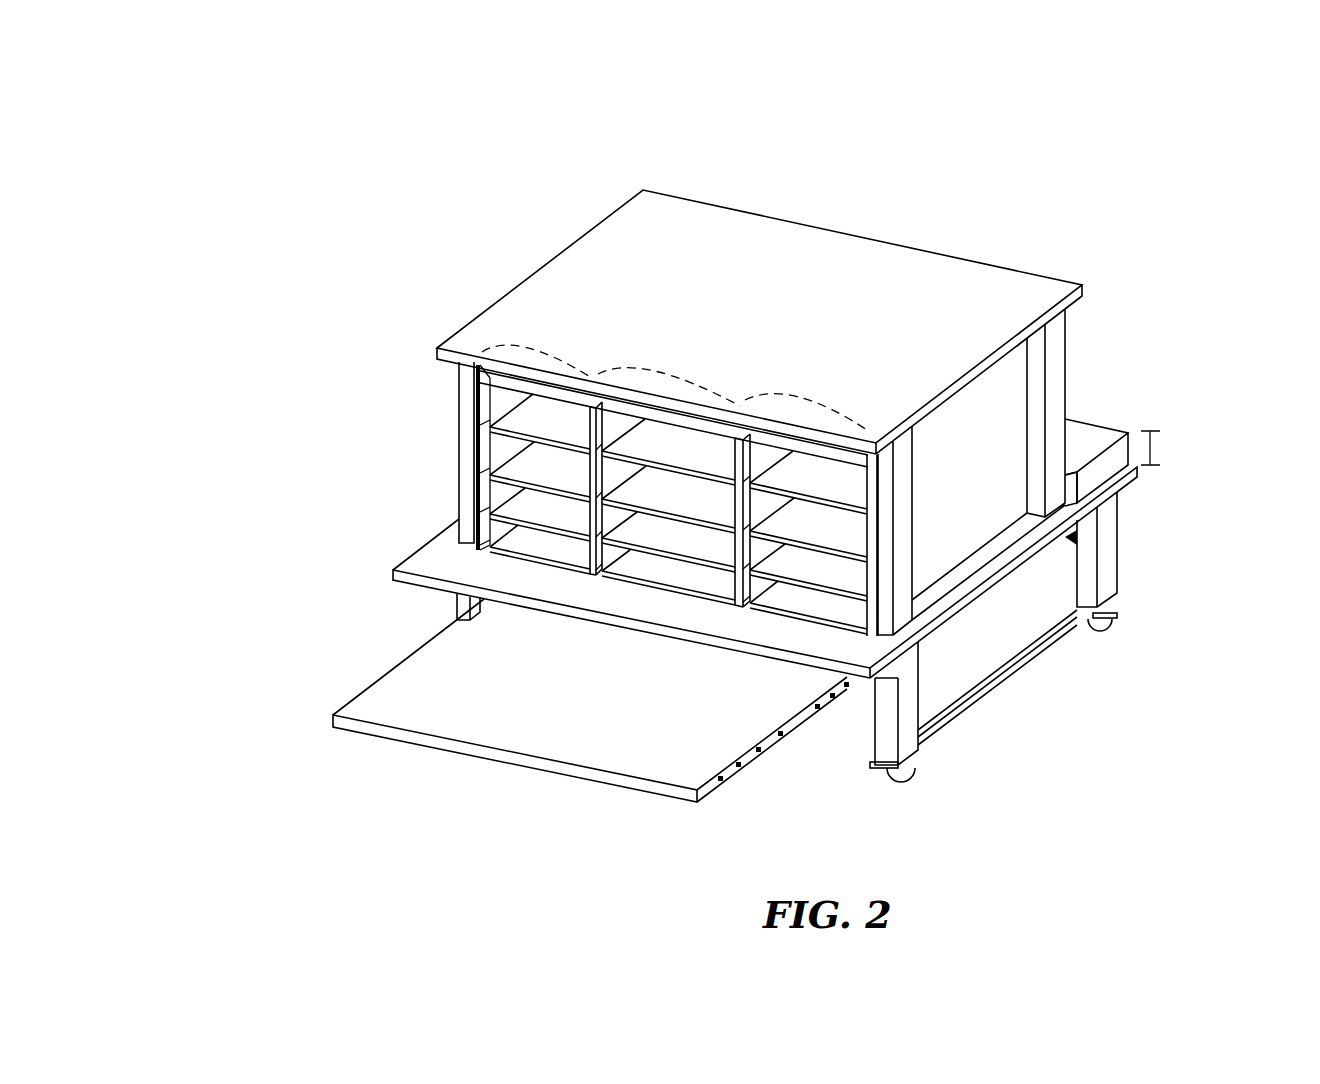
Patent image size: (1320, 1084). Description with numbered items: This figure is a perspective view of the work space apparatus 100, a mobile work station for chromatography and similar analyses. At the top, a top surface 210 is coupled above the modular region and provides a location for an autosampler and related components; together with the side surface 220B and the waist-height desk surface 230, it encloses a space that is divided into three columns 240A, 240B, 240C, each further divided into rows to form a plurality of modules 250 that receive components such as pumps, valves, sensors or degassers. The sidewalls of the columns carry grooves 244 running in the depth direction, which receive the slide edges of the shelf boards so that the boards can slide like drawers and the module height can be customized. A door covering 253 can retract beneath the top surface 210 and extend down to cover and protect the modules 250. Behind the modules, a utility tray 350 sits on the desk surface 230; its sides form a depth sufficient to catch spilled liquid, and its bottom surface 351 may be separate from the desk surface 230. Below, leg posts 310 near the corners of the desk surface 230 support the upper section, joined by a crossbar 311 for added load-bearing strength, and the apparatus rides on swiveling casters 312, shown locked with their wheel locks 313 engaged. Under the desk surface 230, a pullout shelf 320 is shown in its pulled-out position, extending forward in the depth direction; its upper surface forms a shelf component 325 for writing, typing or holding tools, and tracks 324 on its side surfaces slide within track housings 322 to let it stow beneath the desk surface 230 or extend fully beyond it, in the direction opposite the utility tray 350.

The work space apparatus 100 is at (222, 104).
The top surface 210 is at (652, 246).
The side surface 220B is at (955, 476).
The desk surface 230 is at (1143, 470).
The column 240A is at (472, 456).
The column 240B is at (669, 481).
The column 240C is at (807, 508).
The groove 244 is at (480, 447).
The module 250 is at (527, 421).
The door covering 253 is at (822, 447).
The leg post 310 is at (1120, 540).
The crossbar 311 is at (1004, 693).
The swiveling caster 312 is at (920, 768).
The wheel lock 313 is at (880, 769).
The pullout shelf 320 is at (560, 711).
The track housing 322 is at (838, 700).
The track 324 is at (780, 738).
The shelf component 325 is at (587, 748).
The utility tray 350 is at (1118, 439).
The bottom surface 351 is at (1073, 457).